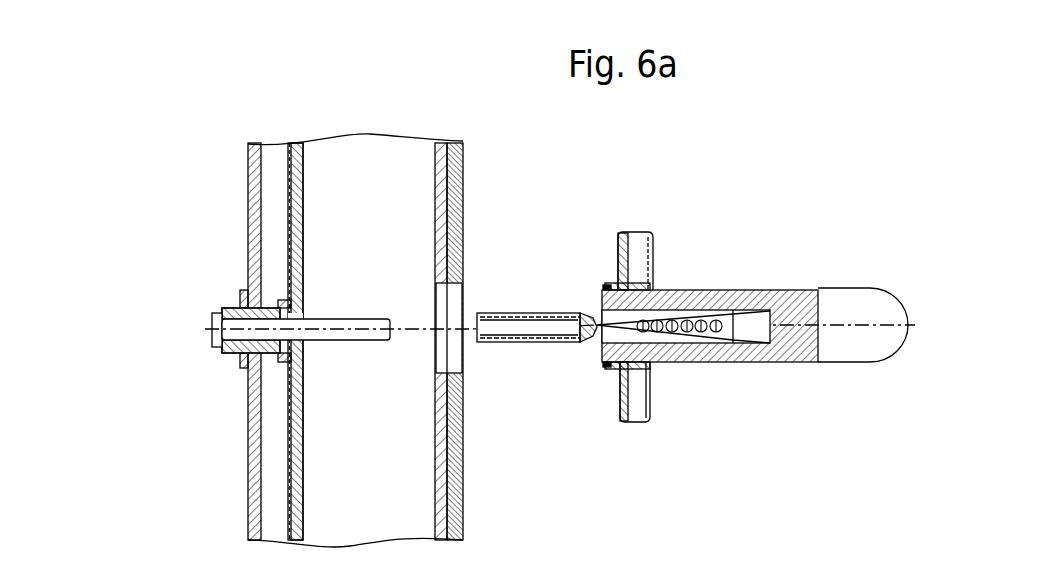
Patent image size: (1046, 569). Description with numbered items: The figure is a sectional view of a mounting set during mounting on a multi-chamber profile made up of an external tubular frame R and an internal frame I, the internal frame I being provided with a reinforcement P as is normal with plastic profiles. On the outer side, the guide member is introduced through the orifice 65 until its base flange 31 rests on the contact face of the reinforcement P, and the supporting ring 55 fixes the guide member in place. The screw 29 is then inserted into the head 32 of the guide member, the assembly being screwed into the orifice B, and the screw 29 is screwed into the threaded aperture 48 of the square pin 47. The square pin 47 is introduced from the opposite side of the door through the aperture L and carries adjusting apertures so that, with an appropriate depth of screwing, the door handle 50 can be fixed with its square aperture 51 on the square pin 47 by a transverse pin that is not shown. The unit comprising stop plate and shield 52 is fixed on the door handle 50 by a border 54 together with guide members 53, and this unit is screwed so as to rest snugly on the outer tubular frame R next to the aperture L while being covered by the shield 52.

The screw 29 is at (222, 329).
The base flange 31 is at (300, 373).
The head 32 is at (200, 304).
The square pin 47 is at (533, 346).
The threaded aperture 48 is at (603, 326).
The door handle 50 is at (855, 362).
The square aperture 51 is at (743, 350).
The shield 52 is at (662, 230).
The guide members 53 is at (648, 283).
The border 54 is at (610, 287).
The supporting ring 55 is at (236, 370).
The orifice 65 is at (252, 273).
The external tubular frame R is at (253, 143).
The reinforcement P is at (289, 143).
The internal frame I is at (297, 143).
The orifice B is at (298, 318).
The aperture L is at (448, 307).